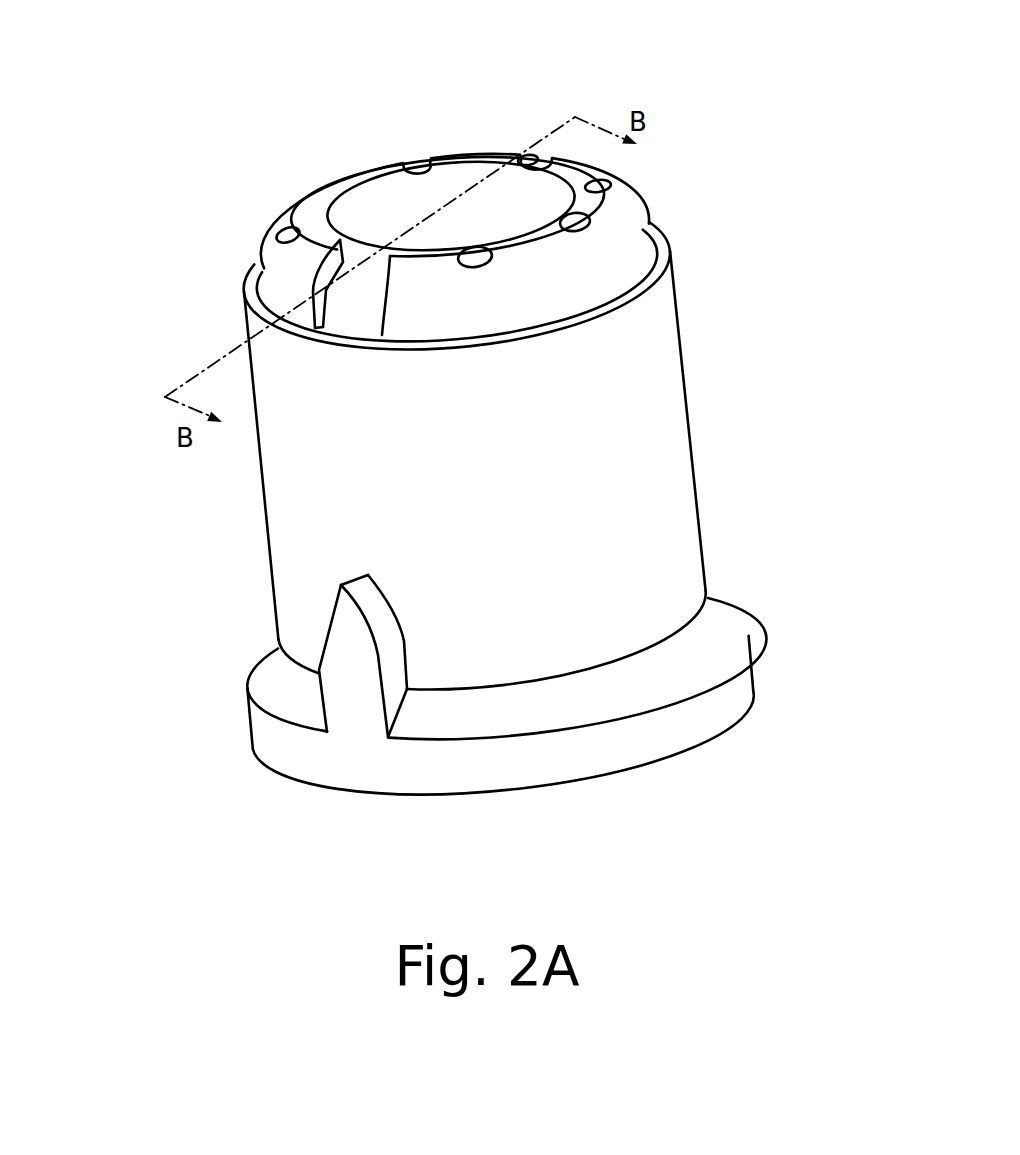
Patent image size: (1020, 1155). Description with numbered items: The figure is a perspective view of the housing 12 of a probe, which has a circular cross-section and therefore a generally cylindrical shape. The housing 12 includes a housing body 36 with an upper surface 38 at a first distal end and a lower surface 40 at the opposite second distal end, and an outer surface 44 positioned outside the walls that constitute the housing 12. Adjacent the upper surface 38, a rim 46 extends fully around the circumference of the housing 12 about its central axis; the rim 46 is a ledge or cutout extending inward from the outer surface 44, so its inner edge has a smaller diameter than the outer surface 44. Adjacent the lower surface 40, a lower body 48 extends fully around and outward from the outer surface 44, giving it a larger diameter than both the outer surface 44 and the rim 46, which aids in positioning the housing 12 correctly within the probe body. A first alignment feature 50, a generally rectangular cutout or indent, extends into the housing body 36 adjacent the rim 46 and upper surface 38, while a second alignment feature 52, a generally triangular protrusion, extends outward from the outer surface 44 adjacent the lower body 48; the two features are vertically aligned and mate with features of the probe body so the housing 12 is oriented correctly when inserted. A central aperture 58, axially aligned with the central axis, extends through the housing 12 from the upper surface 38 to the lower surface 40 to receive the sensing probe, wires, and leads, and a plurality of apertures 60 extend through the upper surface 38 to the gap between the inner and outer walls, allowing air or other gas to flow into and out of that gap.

The housing 12 is at (162, 158).
The housing body 36 is at (712, 485).
The upper surface 38 is at (313, 212).
The lower surface 40 is at (643, 765).
The outer surface 44 is at (590, 535).
The rim 46 is at (658, 255).
The lower body 48 is at (708, 707).
The first alignment feature 50 is at (357, 302).
The second alignment feature 52 is at (342, 699).
The central aperture 58 is at (433, 185).
The plurality of apertures 60 is at (493, 262).